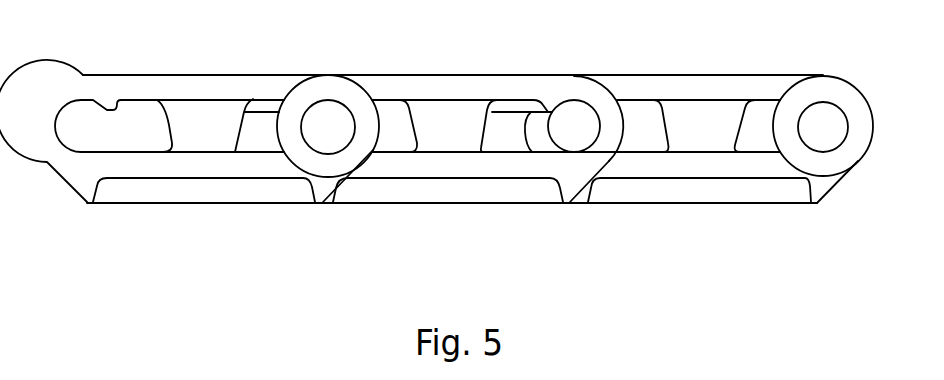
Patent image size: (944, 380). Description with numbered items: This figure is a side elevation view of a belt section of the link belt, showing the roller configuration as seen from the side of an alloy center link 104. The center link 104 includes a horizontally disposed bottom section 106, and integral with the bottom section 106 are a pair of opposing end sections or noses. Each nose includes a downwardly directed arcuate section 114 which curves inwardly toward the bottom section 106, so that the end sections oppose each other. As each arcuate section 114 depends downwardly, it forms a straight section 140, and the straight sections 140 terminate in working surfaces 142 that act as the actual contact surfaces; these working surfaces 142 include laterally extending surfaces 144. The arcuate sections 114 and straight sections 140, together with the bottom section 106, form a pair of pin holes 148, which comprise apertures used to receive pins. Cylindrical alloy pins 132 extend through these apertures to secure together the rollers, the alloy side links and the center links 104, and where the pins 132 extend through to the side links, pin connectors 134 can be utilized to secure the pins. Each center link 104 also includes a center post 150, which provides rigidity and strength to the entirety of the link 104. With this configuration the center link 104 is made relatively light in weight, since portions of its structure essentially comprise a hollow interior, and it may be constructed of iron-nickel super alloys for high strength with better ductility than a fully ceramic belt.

The center link 104 is at (523, 87).
The bottom section 106 is at (453, 75).
The arcuate section 114 is at (623, 133).
The alloy pin 132 is at (325, 117).
The pin connector 134 is at (345, 90).
The straight section 140 is at (578, 194).
The working surface 142 is at (462, 203).
The laterally extending surface 144 is at (337, 200).
The pin hole 148 is at (83, 118).
The center post 150 is at (205, 135).